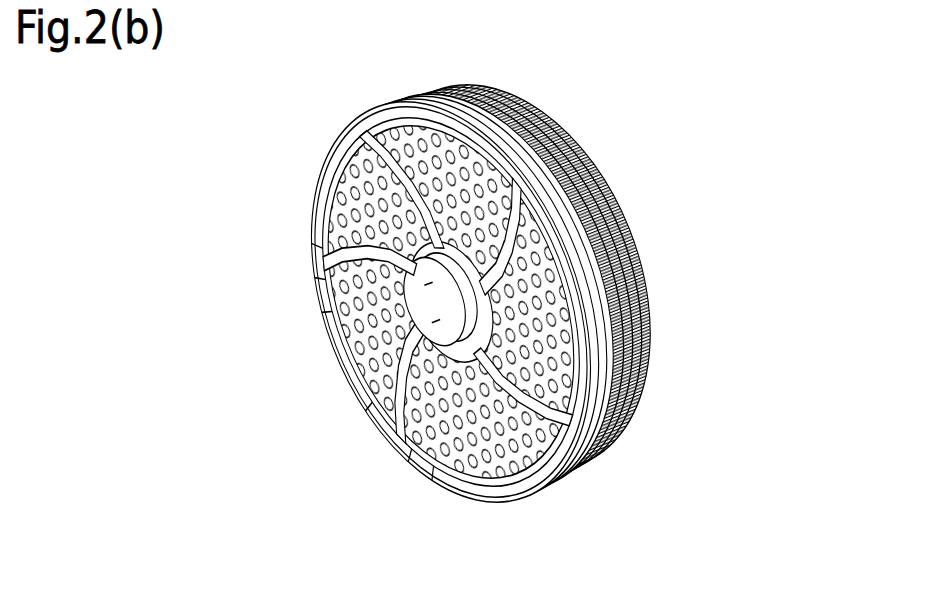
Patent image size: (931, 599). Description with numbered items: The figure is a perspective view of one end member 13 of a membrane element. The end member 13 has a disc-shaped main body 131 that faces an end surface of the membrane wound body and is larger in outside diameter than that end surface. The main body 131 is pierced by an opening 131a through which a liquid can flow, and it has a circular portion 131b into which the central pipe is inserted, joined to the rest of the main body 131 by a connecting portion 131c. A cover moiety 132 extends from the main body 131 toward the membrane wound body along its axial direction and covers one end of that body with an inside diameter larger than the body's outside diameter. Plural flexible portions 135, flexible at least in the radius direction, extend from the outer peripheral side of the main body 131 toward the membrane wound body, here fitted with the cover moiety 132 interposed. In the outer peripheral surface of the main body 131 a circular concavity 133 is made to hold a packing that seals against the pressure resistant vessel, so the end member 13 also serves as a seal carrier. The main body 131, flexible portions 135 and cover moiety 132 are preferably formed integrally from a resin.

The end member 13 is at (340, 99).
The main body 131 is at (420, 467).
The opening 131a is at (334, 214).
The circular portion 131b is at (362, 290).
The connecting portion 131c is at (346, 349).
The cover moiety 132 is at (620, 240).
The circular concavity 133 is at (432, 94).
The flexible portions 135 is at (600, 168).